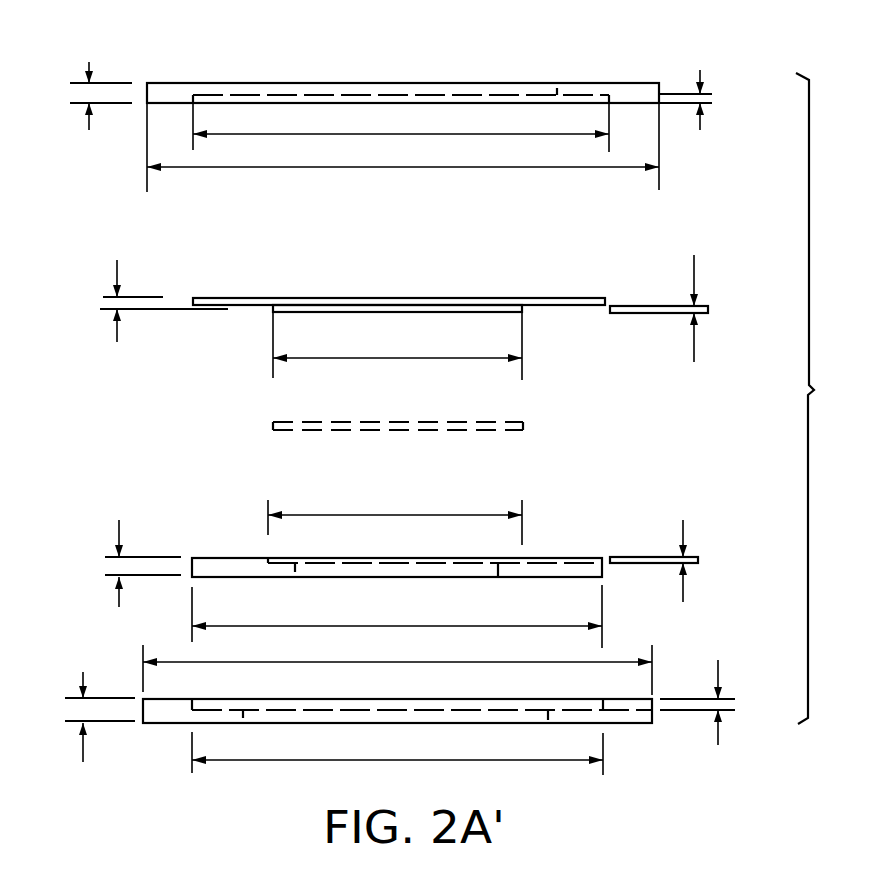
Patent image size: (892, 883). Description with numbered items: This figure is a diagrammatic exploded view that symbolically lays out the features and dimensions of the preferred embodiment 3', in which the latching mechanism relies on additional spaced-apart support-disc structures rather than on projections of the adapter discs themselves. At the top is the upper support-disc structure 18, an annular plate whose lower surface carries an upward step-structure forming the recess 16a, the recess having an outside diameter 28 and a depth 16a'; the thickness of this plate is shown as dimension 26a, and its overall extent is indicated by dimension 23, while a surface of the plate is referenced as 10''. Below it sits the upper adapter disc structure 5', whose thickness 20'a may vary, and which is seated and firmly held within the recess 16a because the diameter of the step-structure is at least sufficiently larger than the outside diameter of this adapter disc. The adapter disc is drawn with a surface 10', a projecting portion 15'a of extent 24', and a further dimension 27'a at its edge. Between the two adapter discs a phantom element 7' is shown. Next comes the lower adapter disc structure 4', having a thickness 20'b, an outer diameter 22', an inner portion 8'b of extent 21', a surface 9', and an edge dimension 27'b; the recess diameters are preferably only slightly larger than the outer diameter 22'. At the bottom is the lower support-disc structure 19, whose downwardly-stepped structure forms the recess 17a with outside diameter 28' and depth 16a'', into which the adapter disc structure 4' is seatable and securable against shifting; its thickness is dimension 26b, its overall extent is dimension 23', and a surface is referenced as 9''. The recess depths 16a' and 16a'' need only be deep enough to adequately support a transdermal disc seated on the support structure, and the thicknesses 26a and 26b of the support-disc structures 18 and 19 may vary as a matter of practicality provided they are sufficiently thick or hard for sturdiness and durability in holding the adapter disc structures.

The upper support-disc structure 18 is at (659, 84).
The recess 16a is at (380, 119).
The bar surface 10'' is at (317, 117).
The thickness of support-disc structure 18 26a is at (77, 93).
The depth of recess 16a 16a' is at (733, 107).
The outside diameter of recess 16a 28 is at (401, 138).
The length of bar 18 23 is at (403, 157).
The upper adapter disc structure 5' is at (404, 275).
The plate surface 10' is at (427, 277).
The lower plate portion 15'a is at (397, 332).
The thickness of adapter disc structure 5' 20'a is at (81, 308).
The thickness of right lead 27'a is at (733, 308).
The length of lower plate portion 24' is at (397, 356).
The spacer (phantom) 7' is at (424, 412).
The embodiment 3' is at (825, 398).
The lower adapter disc structure 4' is at (401, 585).
The inner layer of bar 4' 8'b is at (435, 547).
The bar surface 9' is at (340, 597).
The thickness of adapter disc structure 4' 20'b is at (84, 557).
The thickness of right lead 27'b is at (719, 553).
The length of inner layer 21' is at (395, 511).
The outer diameter of adapter disc structure 4' 22' is at (397, 616).
The lower support-disc structure 19 is at (144, 724).
The recess 17a is at (205, 707).
The bar surface 9'' is at (315, 742).
The thickness of support-disc structure 19 26b is at (77, 712).
The depth of recess 17a 16a'' is at (756, 696).
The length of bar 19 23' is at (397, 674).
The outside diameter of recess 17a 28' is at (397, 751).